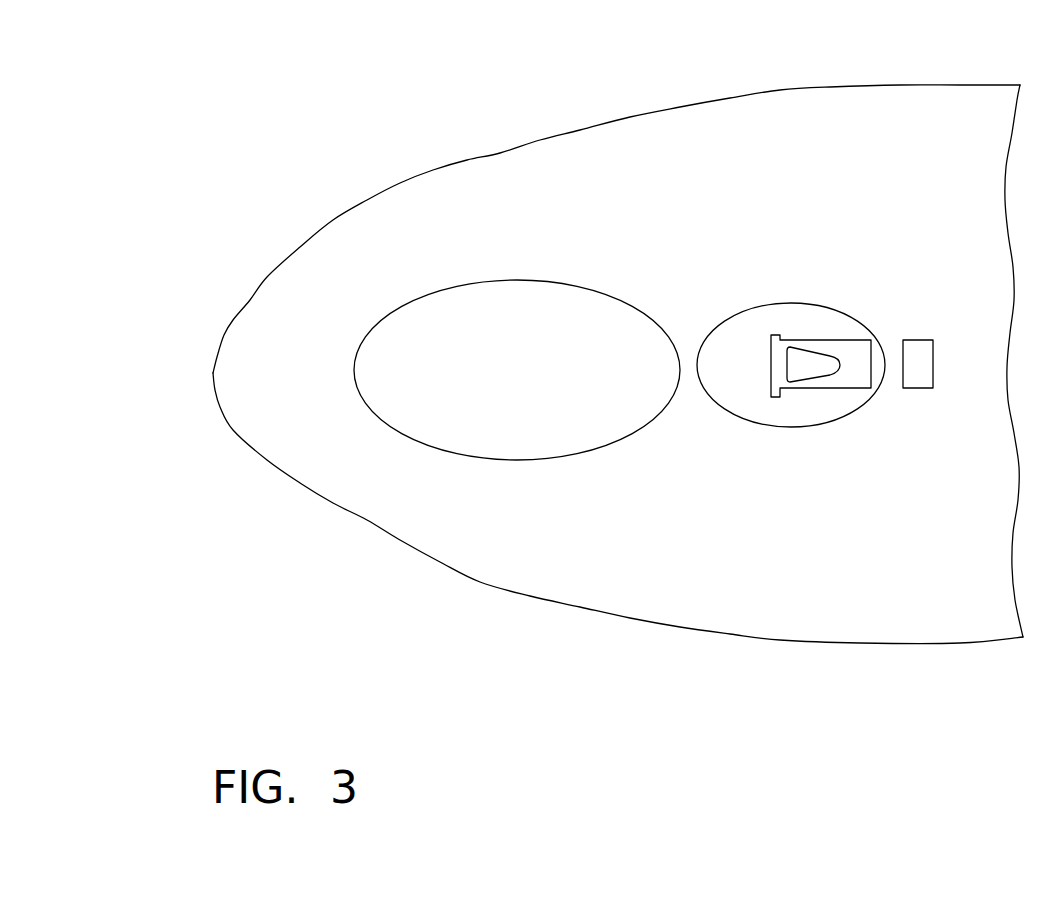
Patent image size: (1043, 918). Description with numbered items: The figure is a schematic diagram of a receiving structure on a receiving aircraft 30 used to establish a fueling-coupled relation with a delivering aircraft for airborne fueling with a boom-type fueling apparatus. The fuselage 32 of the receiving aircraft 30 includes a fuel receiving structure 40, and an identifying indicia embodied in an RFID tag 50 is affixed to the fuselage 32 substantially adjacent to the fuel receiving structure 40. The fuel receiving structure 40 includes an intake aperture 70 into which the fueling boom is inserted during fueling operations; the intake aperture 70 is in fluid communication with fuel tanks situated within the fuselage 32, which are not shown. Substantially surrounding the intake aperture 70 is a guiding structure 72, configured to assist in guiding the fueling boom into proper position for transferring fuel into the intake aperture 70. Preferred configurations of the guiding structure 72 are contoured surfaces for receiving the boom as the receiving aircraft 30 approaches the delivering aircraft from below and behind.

The receiving aircraft 30 is at (618, 332).
The fuselage 32 is at (808, 88).
The fuel receiving structure 40 is at (819, 435).
The RFID tag 50 is at (917, 389).
The intake aperture 70 is at (795, 367).
The guiding structure 72 is at (810, 426).